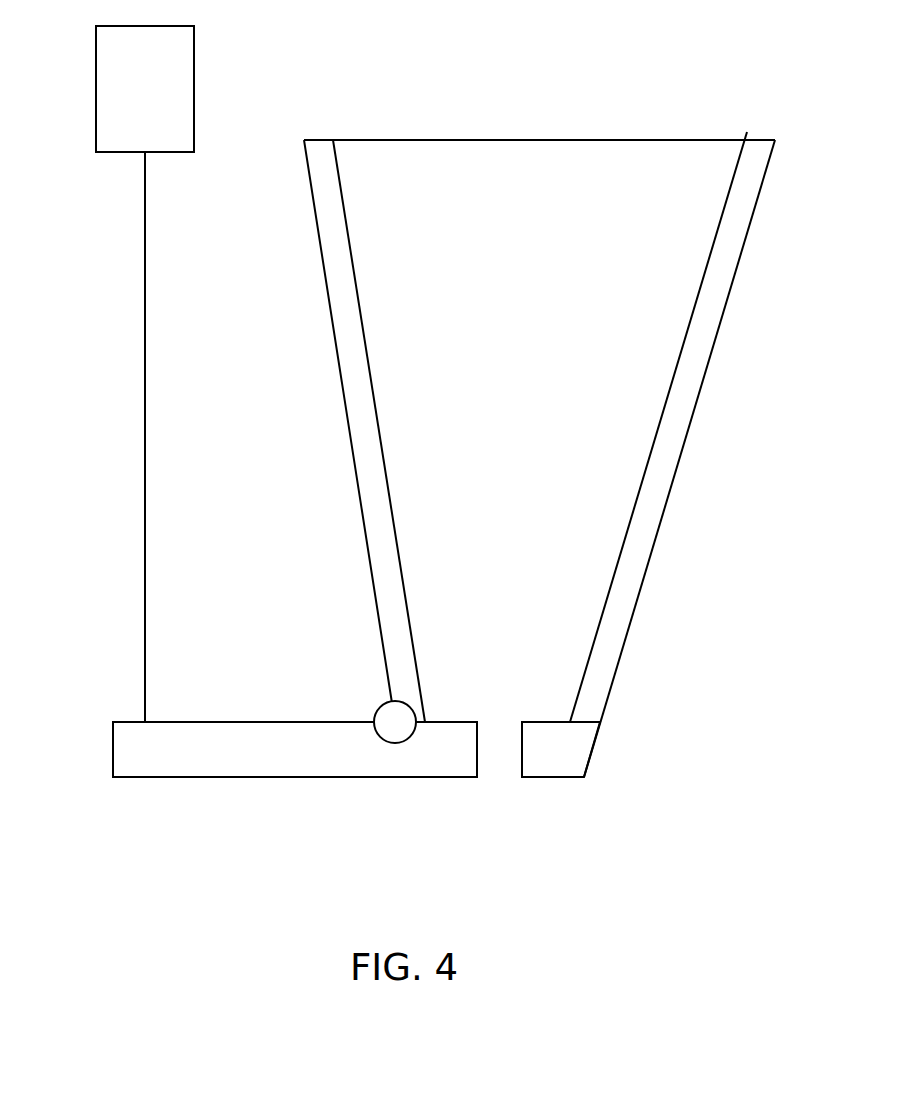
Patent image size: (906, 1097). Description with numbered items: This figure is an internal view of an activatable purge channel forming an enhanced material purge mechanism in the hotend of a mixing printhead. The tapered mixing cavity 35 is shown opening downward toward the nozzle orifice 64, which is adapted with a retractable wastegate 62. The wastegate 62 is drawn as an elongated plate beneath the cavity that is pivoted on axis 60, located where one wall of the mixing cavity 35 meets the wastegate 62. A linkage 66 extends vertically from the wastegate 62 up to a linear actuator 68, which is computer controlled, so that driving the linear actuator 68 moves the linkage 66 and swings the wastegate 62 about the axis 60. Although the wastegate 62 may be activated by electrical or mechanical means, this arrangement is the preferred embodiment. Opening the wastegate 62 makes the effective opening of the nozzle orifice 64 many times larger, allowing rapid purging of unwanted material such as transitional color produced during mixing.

The mixing cavity 35 is at (637, 460).
The axis 60 is at (378, 702).
The wastegate 62 is at (350, 778).
The nozzle orifice 64 is at (498, 775).
The linkage 66 is at (135, 437).
The linear actuator 68 is at (198, 89).